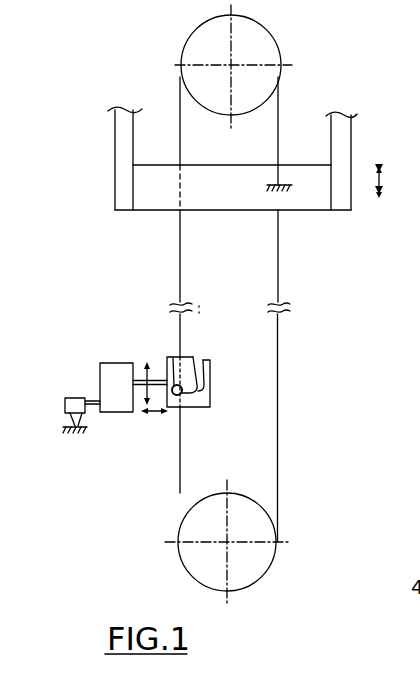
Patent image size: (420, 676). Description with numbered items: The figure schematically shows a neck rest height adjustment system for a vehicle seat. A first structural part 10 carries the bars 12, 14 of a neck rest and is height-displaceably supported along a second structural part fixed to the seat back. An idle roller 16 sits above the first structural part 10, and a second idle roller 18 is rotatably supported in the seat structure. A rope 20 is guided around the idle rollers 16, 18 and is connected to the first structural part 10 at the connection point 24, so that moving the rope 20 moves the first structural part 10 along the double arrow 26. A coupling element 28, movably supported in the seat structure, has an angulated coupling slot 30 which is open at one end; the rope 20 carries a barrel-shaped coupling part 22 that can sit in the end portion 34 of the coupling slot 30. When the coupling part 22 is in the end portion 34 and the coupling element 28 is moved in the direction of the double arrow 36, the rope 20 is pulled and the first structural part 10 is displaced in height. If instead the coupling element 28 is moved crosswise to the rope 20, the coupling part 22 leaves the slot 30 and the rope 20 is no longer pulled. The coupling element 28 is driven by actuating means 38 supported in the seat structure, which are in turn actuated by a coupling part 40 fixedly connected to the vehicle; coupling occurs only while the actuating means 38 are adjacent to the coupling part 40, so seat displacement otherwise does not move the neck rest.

The first structural part 10 is at (241, 198).
The bar of neck rest 12 is at (132, 133).
The bar of neck rest 14 is at (345, 140).
The idle roller 16 is at (270, 50).
The second idle roller 18 is at (263, 530).
The rope 20 is at (278, 388).
The coupling part 22 is at (192, 380).
The rope connection point 24 is at (288, 182).
The double arrow 26 is at (383, 178).
The coupling element 28 is at (190, 408).
The coupling slot 30 is at (182, 387).
The end portion of coupling slot 34 is at (171, 378).
The double arrow 36 is at (145, 375).
The actuating means 38 is at (117, 413).
The coupling part 40 is at (73, 402).